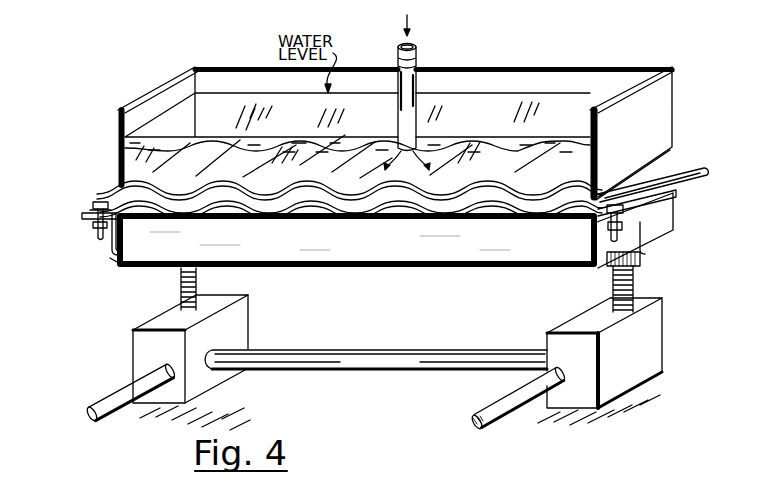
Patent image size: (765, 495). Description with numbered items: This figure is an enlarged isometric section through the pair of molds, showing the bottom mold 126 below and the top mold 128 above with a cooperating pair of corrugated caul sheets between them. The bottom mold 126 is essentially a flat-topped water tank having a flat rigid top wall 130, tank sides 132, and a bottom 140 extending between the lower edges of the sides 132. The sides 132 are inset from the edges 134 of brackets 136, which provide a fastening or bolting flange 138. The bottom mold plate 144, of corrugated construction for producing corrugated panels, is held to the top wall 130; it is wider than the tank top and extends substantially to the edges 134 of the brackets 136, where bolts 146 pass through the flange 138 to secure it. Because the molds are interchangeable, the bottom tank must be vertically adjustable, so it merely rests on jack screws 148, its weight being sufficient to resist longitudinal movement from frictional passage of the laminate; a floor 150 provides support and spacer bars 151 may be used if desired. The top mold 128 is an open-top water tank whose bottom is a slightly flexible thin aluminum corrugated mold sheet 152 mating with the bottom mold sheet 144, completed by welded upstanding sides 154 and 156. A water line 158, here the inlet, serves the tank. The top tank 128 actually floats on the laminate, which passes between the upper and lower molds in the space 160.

The bottom mold 126 is at (313, 277).
The top mold 128 is at (247, 58).
The flat rigid top wall 130 is at (413, 219).
The tank sides 132 is at (116, 257).
The edges 134 is at (80, 211).
The brackets 136 is at (115, 240).
The fastening flange 138 is at (93, 223).
The bottom 140 is at (358, 270).
The bottom mold plate 144 is at (707, 175).
The bolts 146 is at (104, 203).
The jack screws 148 is at (180, 288).
The floor 150 is at (652, 394).
The spacer bars 151 is at (377, 350).
The corrugated mold sheet 152 is at (168, 172).
The upstanding side 154 is at (118, 110).
The upstanding side 156 is at (503, 70).
The water inlet line 158 is at (415, 50).
The space 160 is at (279, 222).